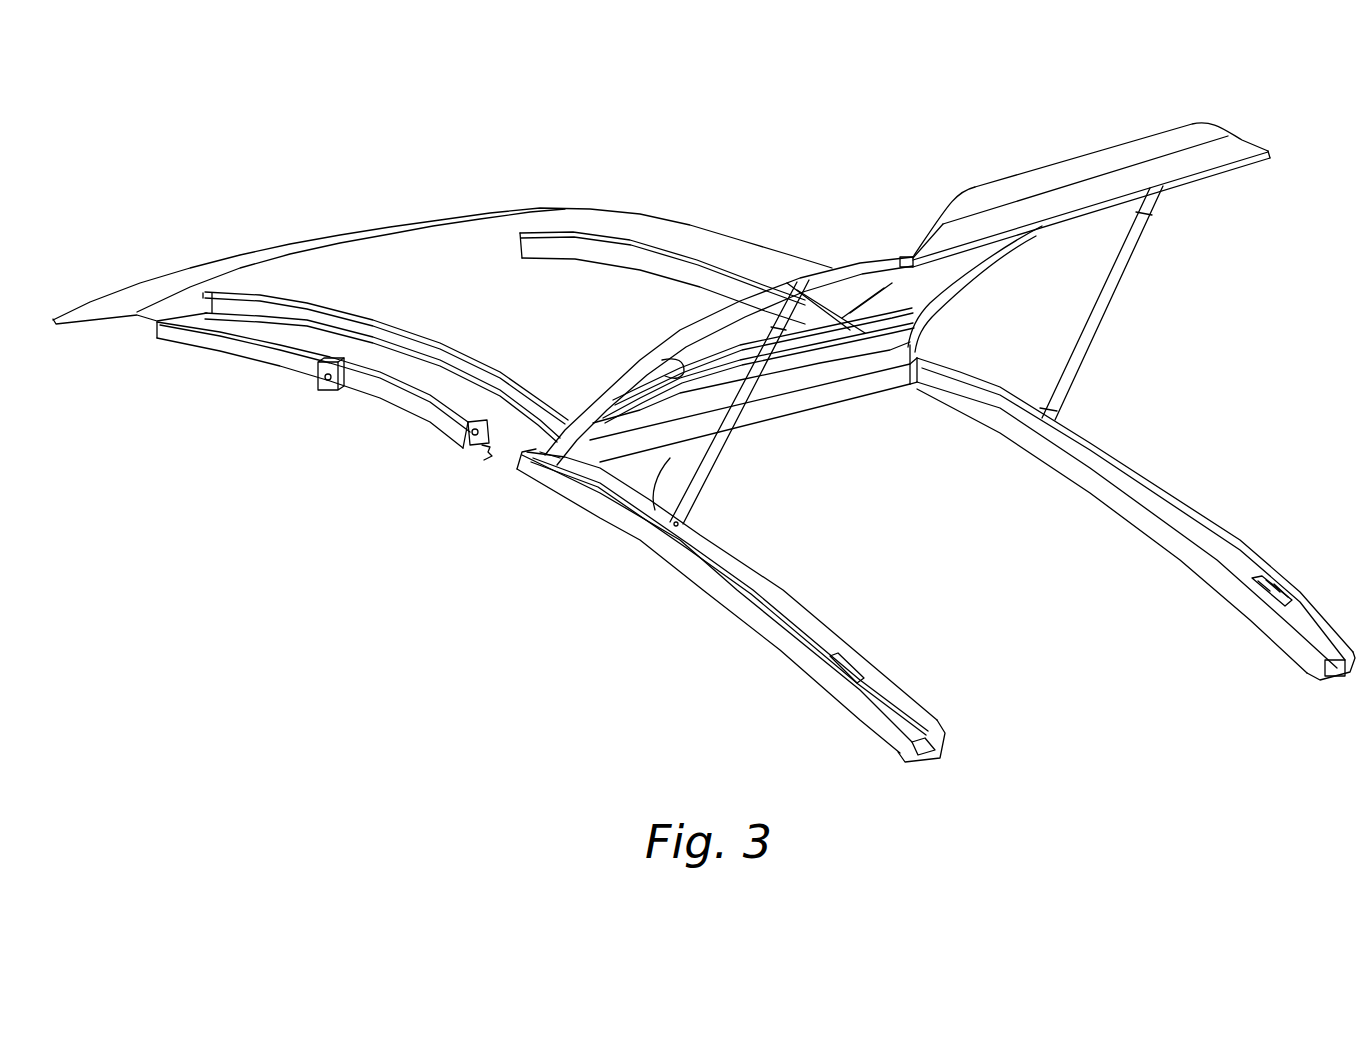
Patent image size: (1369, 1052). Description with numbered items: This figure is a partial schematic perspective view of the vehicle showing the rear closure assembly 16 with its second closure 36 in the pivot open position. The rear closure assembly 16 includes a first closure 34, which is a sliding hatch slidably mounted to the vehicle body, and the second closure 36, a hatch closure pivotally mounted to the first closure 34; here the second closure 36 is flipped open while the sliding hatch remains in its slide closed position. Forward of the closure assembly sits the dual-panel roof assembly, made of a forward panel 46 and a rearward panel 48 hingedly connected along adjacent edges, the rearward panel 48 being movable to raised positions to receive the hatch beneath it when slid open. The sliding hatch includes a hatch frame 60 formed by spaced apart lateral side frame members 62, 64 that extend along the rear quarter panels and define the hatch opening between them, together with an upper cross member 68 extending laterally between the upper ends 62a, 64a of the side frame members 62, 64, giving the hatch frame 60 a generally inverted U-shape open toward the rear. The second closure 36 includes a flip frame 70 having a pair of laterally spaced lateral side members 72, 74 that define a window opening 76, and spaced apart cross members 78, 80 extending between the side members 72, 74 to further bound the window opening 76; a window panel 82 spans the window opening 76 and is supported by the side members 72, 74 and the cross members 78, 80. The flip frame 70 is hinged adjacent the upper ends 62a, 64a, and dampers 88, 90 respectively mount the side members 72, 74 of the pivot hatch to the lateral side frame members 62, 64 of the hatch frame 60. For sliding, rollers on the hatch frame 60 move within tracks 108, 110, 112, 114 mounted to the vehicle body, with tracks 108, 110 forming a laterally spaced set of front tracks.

The rear closure assembly 16 is at (1245, 371).
The first closure 34 is at (1163, 391).
The second closure 36 is at (1255, 190).
The forward panel 46 is at (185, 275).
The rearward panel 48 is at (458, 252).
The hatch frame 60 is at (768, 440).
The lateral side frame member 62 is at (903, 698).
The upper end 62a is at (567, 453).
The lateral side frame member 64 is at (1190, 553).
The upper end 64a is at (935, 345).
The upper cross member 68 is at (740, 427).
The flip frame 70 is at (797, 258).
The lateral side member 72 is at (675, 336).
The lateral side member 74 is at (963, 292).
The window opening 76 is at (675, 372).
The cross member 78 is at (790, 375).
The cross member 80 is at (1117, 185).
The window panel 82 is at (797, 338).
The damper 88 is at (677, 458).
The damper 90 is at (1120, 292).
The track 108 is at (297, 311).
The track 110 is at (570, 243).
The track 112 is at (730, 595).
The track 114 is at (1232, 545).